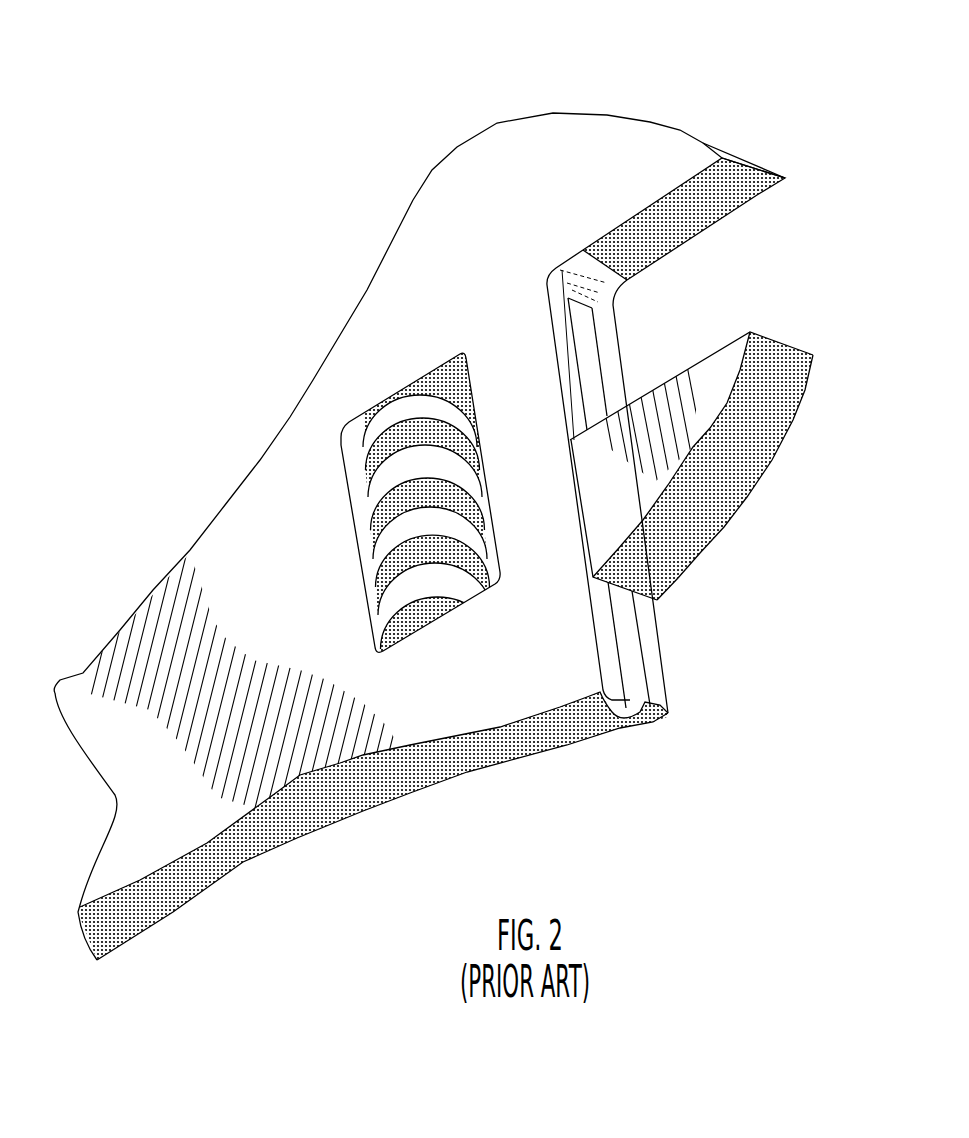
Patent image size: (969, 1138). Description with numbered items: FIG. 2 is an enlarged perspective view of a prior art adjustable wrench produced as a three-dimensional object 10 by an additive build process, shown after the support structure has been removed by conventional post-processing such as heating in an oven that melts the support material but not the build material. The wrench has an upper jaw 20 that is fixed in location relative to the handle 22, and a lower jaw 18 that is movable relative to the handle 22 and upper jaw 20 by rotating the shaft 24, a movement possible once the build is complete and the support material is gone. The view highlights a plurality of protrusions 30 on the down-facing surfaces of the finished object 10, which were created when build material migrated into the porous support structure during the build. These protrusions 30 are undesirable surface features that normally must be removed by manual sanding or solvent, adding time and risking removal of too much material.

The three-dimensional object 10 is at (253, 493).
The lower jaw 18 is at (706, 365).
The upper jaw 20 is at (603, 126).
The handle 22 is at (140, 825).
The shaft 24 is at (367, 407).
The protrusions 30 is at (757, 197).